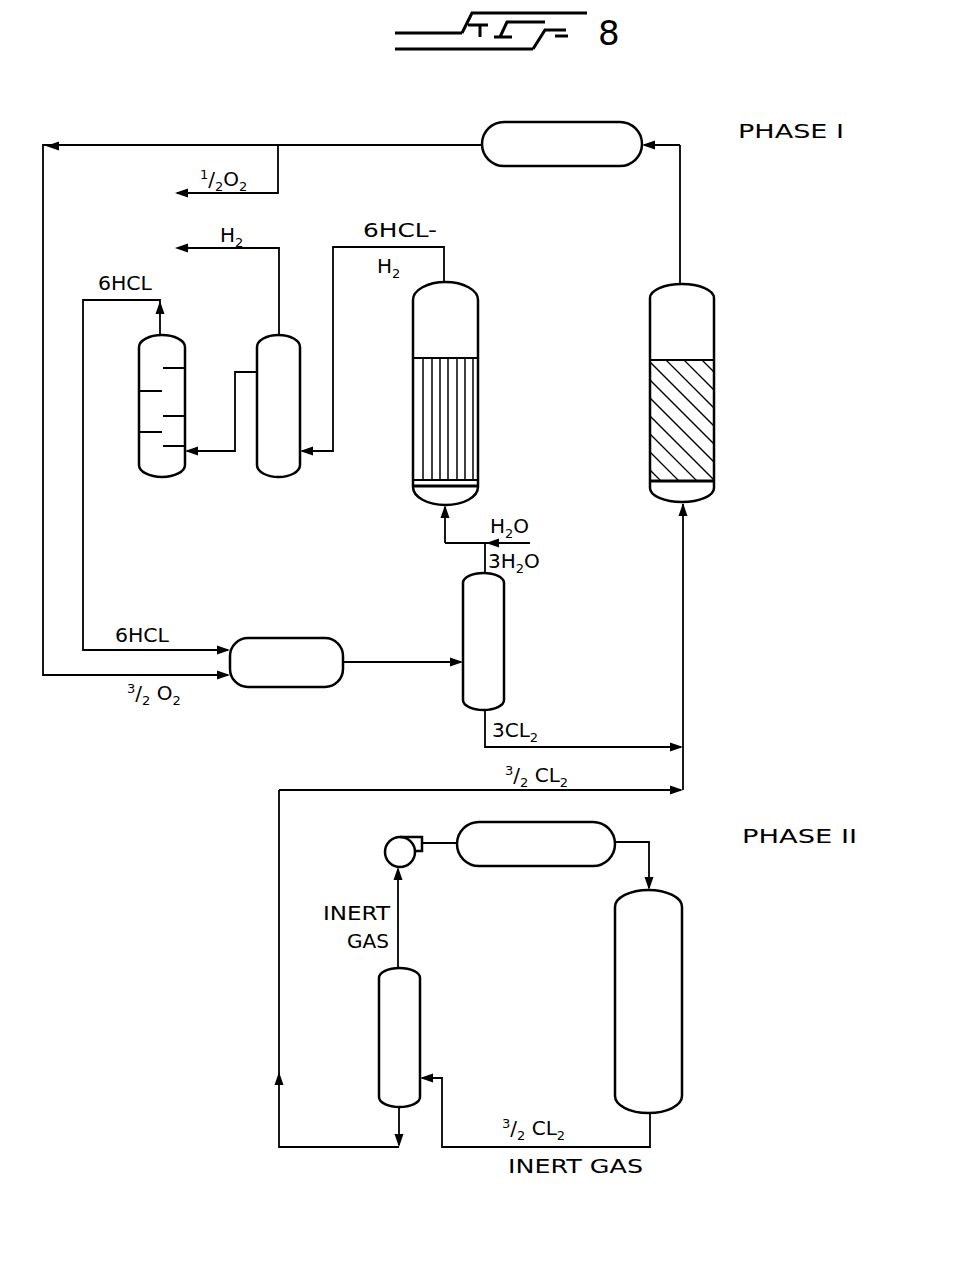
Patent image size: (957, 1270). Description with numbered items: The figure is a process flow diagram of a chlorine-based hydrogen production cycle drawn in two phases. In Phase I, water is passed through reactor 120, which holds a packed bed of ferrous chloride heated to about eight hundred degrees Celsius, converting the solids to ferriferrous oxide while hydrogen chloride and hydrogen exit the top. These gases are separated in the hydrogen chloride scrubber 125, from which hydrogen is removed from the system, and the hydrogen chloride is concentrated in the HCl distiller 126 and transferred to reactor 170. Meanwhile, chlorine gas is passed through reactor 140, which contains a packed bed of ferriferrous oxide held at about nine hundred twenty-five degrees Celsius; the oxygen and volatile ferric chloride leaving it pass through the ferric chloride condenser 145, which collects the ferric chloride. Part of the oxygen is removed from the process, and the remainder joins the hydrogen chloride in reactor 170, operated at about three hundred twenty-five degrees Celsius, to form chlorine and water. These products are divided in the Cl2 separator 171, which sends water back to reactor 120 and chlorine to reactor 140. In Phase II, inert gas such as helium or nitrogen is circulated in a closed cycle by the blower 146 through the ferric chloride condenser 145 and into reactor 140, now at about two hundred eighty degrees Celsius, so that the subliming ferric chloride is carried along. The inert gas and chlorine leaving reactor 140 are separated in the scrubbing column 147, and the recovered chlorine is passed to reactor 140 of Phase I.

The reactor A 120 is at (478, 493).
The hydrogen chloride scrubber 125 is at (298, 471).
The HCl distiller 126 is at (182, 471).
The reactor B 140 is at (714, 493).
The ferric chloride condenser 145 is at (636, 123).
The blower 146 is at (391, 840).
The scrubbing column 147 is at (418, 976).
The reactor C 170 is at (322, 638).
The Cl2 separator 171 is at (505, 604).